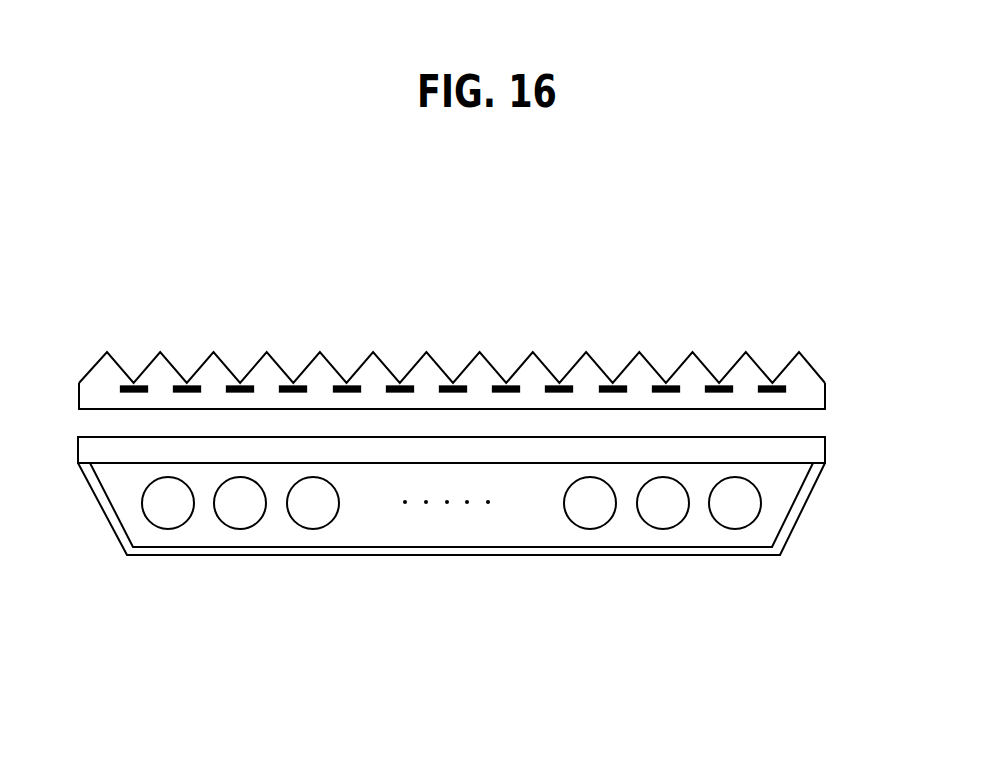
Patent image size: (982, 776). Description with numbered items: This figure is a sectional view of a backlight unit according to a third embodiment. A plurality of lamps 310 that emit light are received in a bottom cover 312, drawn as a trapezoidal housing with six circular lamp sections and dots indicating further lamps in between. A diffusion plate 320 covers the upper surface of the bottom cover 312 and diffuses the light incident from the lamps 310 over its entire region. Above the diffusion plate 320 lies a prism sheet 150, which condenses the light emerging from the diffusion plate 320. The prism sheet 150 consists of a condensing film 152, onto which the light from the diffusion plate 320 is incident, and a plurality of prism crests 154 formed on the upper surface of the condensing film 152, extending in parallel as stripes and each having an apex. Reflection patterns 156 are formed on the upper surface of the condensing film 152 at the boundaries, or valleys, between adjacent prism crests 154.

The prism sheet 150 is at (481, 339).
The condensing film 152 is at (98, 397).
The prism crests 154 is at (162, 368).
The reflection patterns 156 is at (123, 382).
The diffusion plate 320 is at (813, 452).
The bottom cover 312 is at (797, 508).
The lamps 310 is at (665, 512).